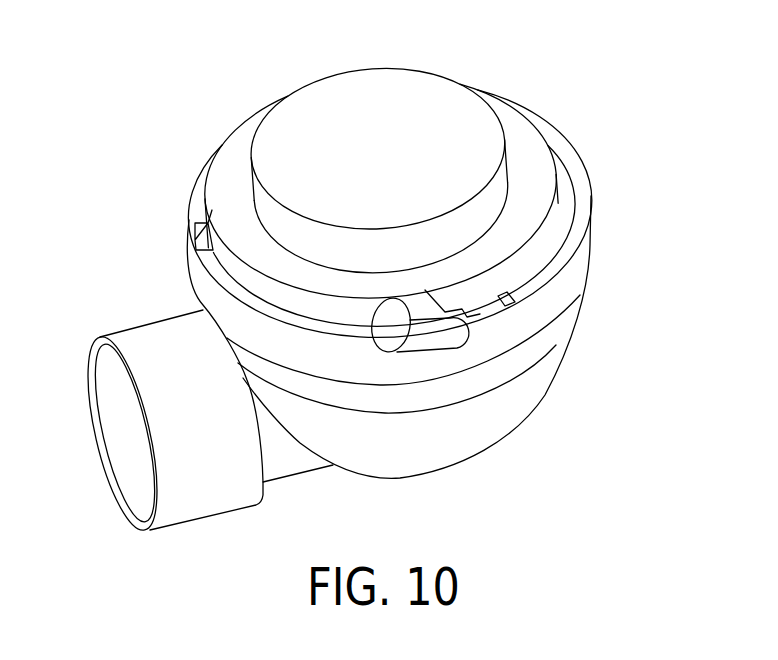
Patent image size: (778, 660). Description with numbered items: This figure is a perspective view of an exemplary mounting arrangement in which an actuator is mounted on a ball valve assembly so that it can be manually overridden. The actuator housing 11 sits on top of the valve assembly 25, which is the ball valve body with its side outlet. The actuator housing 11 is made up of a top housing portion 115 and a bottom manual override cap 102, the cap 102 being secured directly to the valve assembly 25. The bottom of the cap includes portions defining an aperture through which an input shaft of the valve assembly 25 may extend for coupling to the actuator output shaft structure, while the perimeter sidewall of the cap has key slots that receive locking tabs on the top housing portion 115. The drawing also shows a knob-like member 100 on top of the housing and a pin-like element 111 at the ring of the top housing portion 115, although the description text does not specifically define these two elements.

The actuator housing 11 is at (240, 77).
The valve assembly 25 is at (487, 428).
The knob/cap 100 is at (265, 163).
The bottom manual override cap 102 is at (185, 203).
The latch pin 111 is at (450, 328).
The top housing portion 115 is at (497, 172).